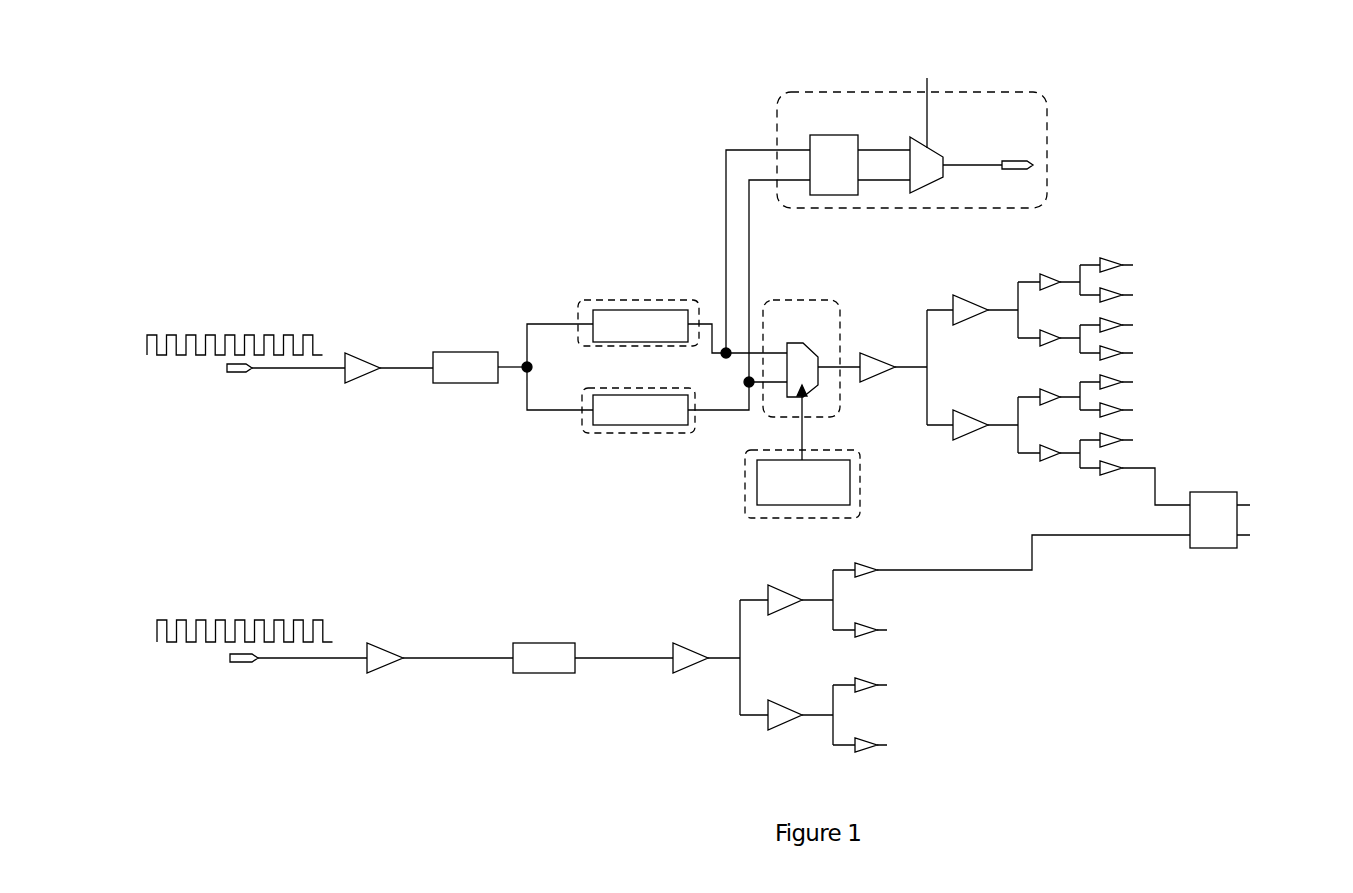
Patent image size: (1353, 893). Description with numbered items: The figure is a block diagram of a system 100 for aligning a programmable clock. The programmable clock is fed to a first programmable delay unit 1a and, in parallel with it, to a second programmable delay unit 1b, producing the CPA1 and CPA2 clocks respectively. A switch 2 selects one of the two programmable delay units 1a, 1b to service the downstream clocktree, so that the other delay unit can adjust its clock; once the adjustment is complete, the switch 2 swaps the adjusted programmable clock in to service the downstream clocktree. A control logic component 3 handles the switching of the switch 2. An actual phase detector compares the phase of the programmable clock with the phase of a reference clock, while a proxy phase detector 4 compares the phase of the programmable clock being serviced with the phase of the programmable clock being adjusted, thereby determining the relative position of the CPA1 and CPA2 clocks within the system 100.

The system for aligning a programmable clock 100 is at (370, 135).
The first programmable delay unit 1a is at (638, 308).
The second programmable delay unit 1b is at (638, 429).
The switch 2 is at (801, 362).
The control logic component 3 is at (785, 484).
The proxy phase detector 4 is at (912, 130).